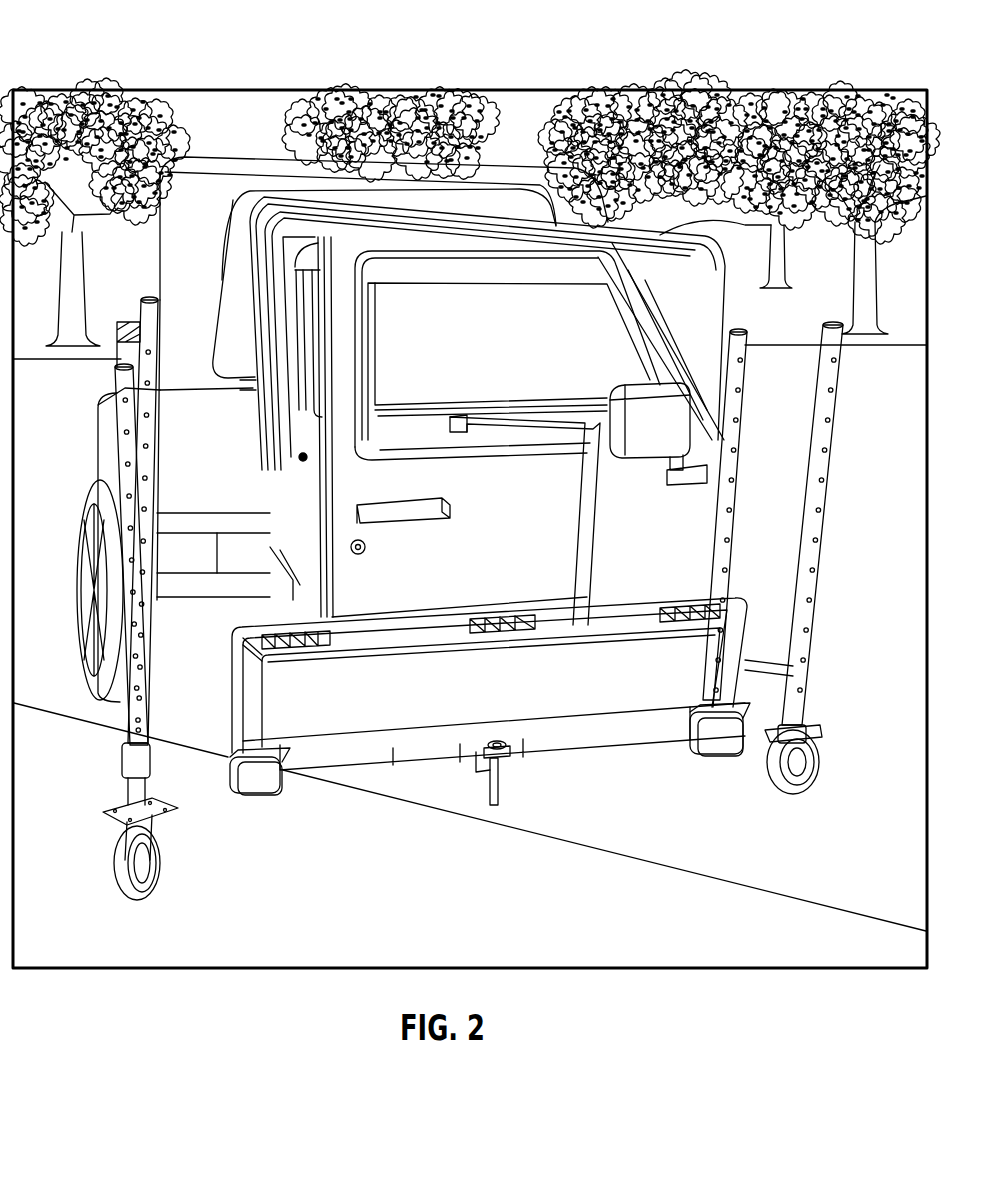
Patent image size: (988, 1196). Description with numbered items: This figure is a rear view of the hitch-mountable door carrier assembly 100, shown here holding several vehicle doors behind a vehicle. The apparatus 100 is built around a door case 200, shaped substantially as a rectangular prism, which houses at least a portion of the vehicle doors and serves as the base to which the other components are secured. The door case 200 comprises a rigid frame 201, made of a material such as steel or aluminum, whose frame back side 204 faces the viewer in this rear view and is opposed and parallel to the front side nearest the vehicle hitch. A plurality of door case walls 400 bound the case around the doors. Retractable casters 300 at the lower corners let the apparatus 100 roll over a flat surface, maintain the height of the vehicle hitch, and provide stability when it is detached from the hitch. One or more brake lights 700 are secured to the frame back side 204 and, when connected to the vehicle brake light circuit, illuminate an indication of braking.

The hitch-mountable door carrier assembly 100 is at (100, 50).
The door case 200 is at (587, 555).
The frame 201 is at (360, 767).
The frame back side 204 is at (450, 748).
The retractable casters 300 is at (155, 890).
The door case walls 400 is at (618, 697).
The brake lights 700 is at (722, 757).